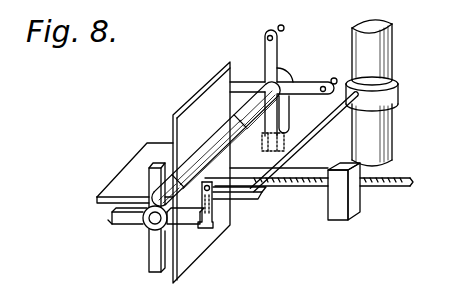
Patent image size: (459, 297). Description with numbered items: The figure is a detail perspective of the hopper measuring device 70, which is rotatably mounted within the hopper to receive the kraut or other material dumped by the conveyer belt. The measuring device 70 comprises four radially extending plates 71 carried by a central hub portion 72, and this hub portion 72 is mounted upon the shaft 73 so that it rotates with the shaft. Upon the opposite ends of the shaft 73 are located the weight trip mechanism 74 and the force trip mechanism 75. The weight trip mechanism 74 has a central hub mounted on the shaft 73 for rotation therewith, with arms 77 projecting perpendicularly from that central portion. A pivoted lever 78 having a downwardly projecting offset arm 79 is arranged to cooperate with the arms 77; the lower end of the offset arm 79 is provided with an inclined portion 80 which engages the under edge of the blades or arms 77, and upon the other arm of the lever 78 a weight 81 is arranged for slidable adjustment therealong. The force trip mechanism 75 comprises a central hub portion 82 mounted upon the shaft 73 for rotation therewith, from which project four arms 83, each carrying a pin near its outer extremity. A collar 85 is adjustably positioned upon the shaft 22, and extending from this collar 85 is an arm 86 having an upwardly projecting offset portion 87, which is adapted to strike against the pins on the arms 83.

The shaft 22 is at (380, 50).
The measuring device 70 is at (162, 145).
The radially extending plates 71 is at (200, 90).
The central hub portion 72 is at (228, 136).
The shaft 73 is at (262, 145).
The weight trip mechanism 74 is at (140, 230).
The force trip mechanism 75 is at (280, 48).
The arms 77 is at (120, 223).
The pivoted lever 78 is at (305, 190).
The offset arm 79 is at (232, 222).
The inclined portion 80 is at (208, 238).
The weight 81 is at (333, 205).
The central hub portion 82 is at (284, 72).
The arms 83 is at (312, 92).
The collar 85 is at (398, 96).
The arm 86 is at (322, 124).
The offset portion 87 is at (283, 140).